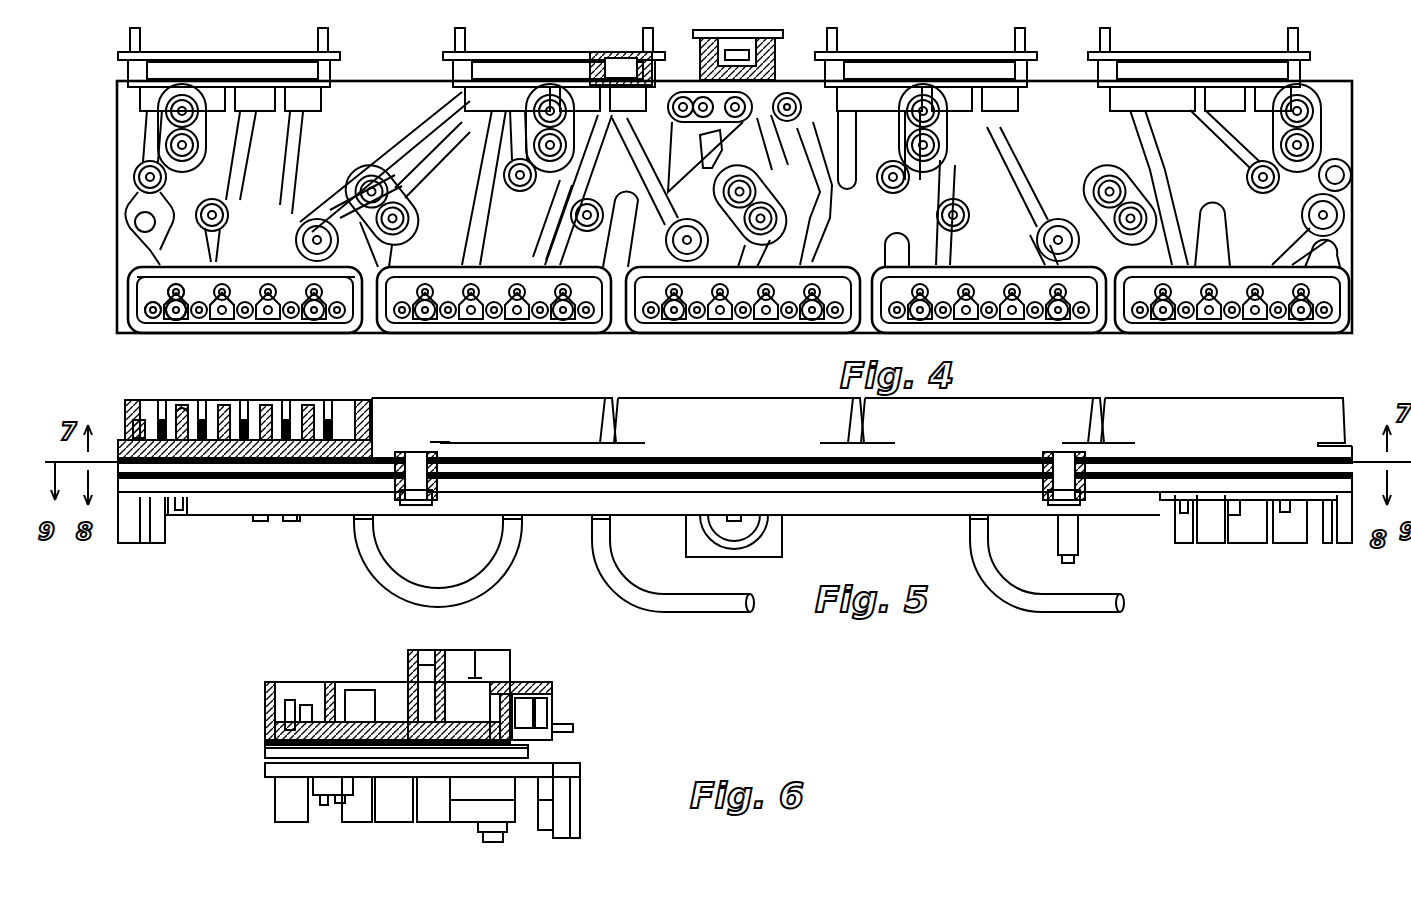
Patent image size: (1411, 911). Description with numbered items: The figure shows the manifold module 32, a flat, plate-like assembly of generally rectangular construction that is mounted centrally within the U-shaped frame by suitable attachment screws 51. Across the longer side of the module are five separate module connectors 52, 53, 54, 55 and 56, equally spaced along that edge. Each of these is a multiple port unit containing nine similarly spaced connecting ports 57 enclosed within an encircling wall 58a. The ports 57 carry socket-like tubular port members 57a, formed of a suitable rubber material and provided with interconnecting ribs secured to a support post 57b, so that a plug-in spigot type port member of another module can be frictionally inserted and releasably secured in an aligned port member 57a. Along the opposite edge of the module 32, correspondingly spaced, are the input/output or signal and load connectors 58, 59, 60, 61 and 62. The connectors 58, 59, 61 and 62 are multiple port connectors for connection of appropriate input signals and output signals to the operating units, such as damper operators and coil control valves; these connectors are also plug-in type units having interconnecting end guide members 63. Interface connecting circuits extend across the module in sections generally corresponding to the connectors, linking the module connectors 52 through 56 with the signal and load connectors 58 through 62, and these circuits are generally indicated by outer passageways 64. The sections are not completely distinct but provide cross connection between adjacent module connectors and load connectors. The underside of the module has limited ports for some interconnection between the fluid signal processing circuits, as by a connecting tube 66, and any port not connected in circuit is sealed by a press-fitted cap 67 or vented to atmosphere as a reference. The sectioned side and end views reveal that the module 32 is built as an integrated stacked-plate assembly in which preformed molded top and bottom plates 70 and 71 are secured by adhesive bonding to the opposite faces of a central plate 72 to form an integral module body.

In FIG. 4, the manifold module 32 is at (395, 90).
In FIG. 4, the attachment screws 51 is at (130, 224).
In FIG. 4, the module connector 52 is at (290, 340).
In FIG. 5, the module connector 52 is at (368, 398).
In FIG. 4, the module connector 53 is at (482, 338).
In FIG. 5, the module connector 53 is at (528, 398).
In FIG. 4, the module connector 54 is at (730, 338).
In FIG. 5, the module connector 54 is at (702, 385).
In FIG. 4, the module connector 55 is at (1025, 338).
In FIG. 5, the module connector 55 is at (1005, 385).
In FIG. 4, the module connector 56 is at (1220, 338).
In FIG. 5, the module connector 56 is at (1198, 385).
In FIG. 6, the module connector 56 is at (262, 688).
In FIG. 4, the connecting ports 57 is at (160, 310).
In FIG. 4, the port members 57a is at (148, 313).
In FIG. 5, the port members 57a is at (138, 400).
In FIG. 4, the support post 57b is at (225, 300).
In FIG. 5, the support post 57b is at (180, 405).
In FIG. 4, the signal and load connector 58 is at (236, 46).
In FIG. 4, the encircling wall 58a is at (232, 335).
In FIG. 5, the encircling wall 58a is at (126, 400).
In FIG. 6, the encircling wall 58a is at (270, 682).
In FIG. 4, the signal and load connector 59 is at (580, 47).
In FIG. 4, the signal and load connector 60 is at (770, 8).
In FIG. 5, the signal and load connector 60 is at (748, 555).
In FIG. 6, the signal and load connector 60 is at (583, 792).
In FIG. 4, the signal and load connector 61 is at (943, 46).
In FIG. 4, the signal and load connector 62 is at (1216, 46).
In FIG. 6, the signal and load connector 62 is at (560, 690).
In FIG. 4, the end guide members 63 is at (462, 45).
In FIG. 4, the outer passageways 64 is at (418, 135).
In FIG. 5, the connecting tube 66 is at (455, 590).
In FIG. 5, the press-fitted cap 67 is at (296, 525).
In FIG. 5, the top plate 70 is at (952, 458).
In FIG. 6, the top plate 70 is at (262, 732).
In FIG. 5, the bottom plate 71 is at (120, 545).
In FIG. 6, the bottom plate 71 is at (262, 776).
In FIG. 5, the central plate 72 is at (717, 466).
In FIG. 6, the central plate 72 is at (262, 752).